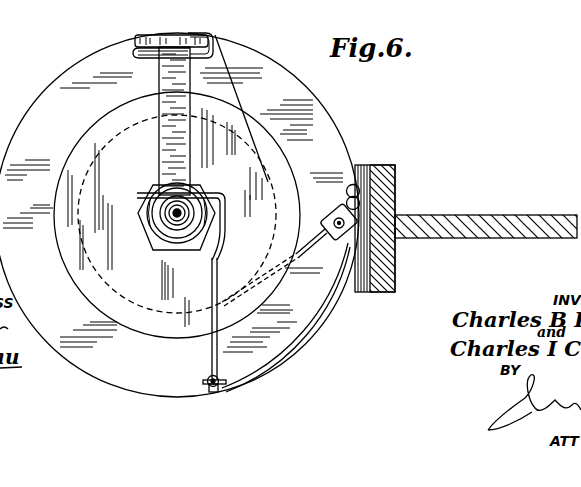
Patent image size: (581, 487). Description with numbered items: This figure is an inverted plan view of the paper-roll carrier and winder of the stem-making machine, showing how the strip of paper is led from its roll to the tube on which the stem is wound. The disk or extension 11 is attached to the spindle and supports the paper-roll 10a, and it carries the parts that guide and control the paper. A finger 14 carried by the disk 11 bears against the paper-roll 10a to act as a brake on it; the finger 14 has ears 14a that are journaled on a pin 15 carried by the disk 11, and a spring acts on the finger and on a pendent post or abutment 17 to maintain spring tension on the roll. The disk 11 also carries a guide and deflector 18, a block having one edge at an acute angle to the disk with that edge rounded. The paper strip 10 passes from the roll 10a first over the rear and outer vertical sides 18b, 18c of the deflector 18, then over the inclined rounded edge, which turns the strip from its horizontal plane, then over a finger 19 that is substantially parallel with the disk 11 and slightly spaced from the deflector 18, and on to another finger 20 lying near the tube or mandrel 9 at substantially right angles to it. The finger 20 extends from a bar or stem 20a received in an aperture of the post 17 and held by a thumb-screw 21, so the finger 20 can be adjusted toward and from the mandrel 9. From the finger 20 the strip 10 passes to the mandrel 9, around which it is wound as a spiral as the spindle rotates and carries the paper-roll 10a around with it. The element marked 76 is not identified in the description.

The tube or mandrel 9 is at (170, 222).
The paper strip 10 is at (161, 145).
The paper-roll 10a is at (254, 186).
The disk or extension 11 is at (179, 215).
The finger 14 is at (314, 239).
The ears 14a is at (346, 241).
The pin 15 is at (347, 215).
The pendent post or abutment 17 is at (208, 378).
The guide and deflector 18 is at (147, 34).
The rear vertical side of deflector 18b is at (216, 34).
The outer vertical side of deflector 18c is at (191, 36).
The finger 19 is at (133, 55).
The finger 20 is at (143, 196).
The bar or stem 20a is at (217, 287).
The thumb-screw 21 is at (208, 388).
The support guide 76 is at (328, 298).